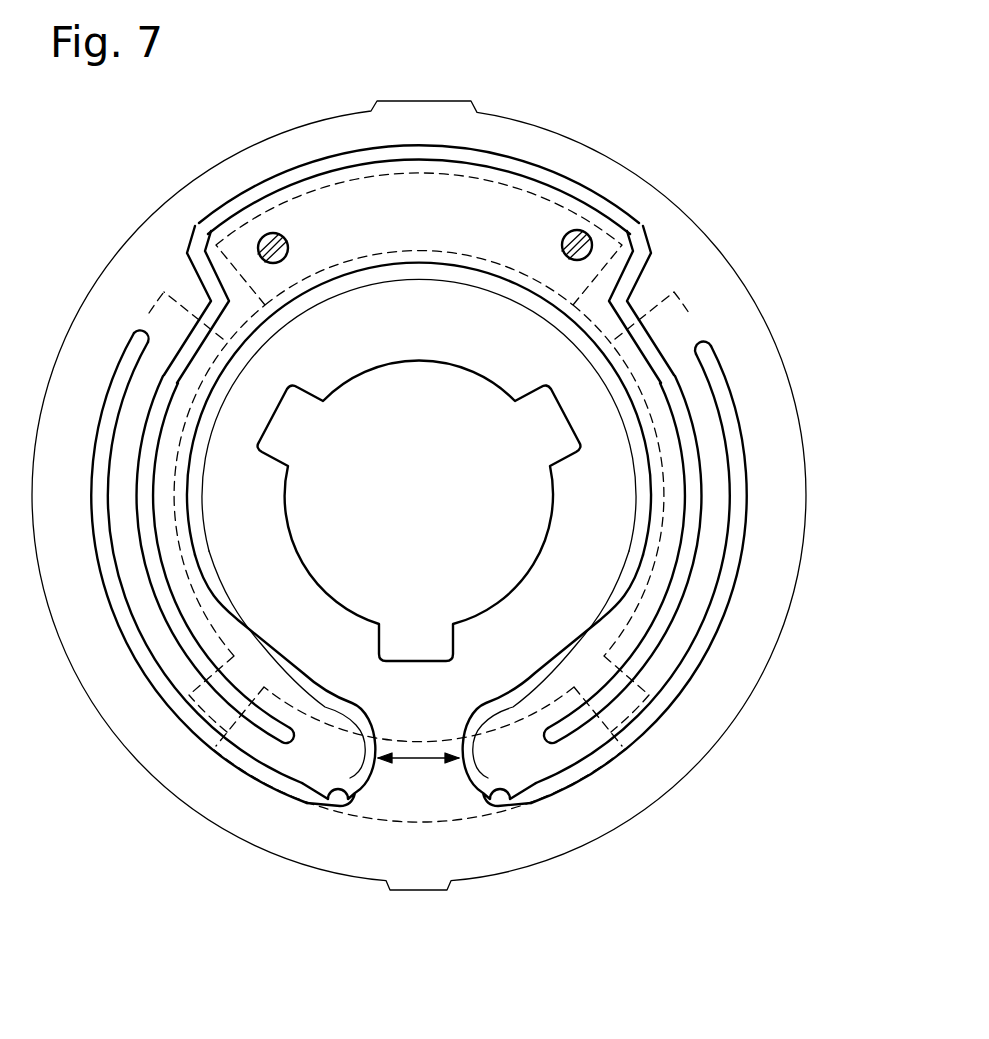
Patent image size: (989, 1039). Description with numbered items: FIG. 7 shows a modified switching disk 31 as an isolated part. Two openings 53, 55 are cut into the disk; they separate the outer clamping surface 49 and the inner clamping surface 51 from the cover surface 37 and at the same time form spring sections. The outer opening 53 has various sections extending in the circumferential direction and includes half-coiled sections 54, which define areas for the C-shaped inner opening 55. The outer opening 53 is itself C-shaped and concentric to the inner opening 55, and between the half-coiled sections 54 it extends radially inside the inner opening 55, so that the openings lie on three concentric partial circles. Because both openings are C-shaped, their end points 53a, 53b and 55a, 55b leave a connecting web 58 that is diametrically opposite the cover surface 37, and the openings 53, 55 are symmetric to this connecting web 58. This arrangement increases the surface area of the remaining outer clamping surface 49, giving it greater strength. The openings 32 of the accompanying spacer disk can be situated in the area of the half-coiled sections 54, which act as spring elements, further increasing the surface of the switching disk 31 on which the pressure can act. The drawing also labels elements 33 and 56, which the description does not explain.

The switching disk 31 is at (210, 910).
The openings 32 is at (164, 292).
The rivet holes 33 is at (266, 236).
The cover surface 37 is at (567, 206).
The outer clamping surface 49 is at (775, 421).
The inner clamping surface 51 is at (579, 526).
The outer opening 53 is at (403, 268).
The end point 53a is at (708, 346).
The end point 53b is at (140, 332).
The half-coiled sections 54 is at (672, 532).
The inner opening 55 is at (436, 145).
The end point 55a is at (548, 740).
The end point 55b is at (302, 745).
The ring end portions 56 is at (467, 762).
The connecting web 58 is at (418, 755).